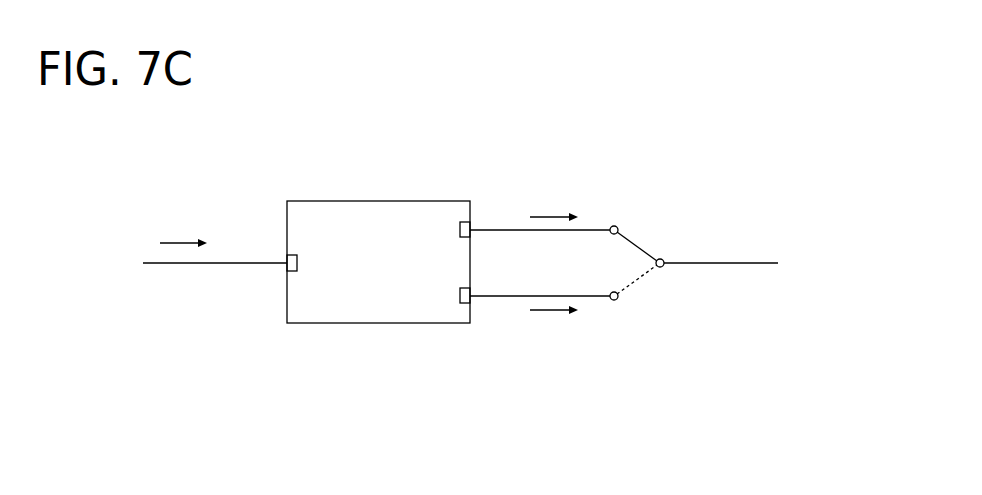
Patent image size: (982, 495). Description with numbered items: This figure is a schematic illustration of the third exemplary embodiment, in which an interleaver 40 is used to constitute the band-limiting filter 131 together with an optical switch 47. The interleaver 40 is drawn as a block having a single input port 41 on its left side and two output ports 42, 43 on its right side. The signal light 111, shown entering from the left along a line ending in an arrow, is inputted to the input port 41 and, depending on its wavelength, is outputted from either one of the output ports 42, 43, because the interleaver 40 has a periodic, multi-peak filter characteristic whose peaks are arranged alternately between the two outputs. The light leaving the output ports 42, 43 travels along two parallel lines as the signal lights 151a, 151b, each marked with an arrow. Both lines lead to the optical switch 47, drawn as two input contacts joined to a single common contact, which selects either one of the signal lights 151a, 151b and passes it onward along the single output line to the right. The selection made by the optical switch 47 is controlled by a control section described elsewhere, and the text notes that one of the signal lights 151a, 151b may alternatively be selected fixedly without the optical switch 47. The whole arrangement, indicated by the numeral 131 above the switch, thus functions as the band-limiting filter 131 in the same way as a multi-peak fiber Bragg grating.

The interleaver 40 is at (384, 201).
The input port 41 is at (288, 255).
The output port 42 is at (466, 222).
The output port 43 is at (465, 304).
The optical switch 47 is at (670, 222).
The signal light 111 is at (177, 243).
The band-limiting filter 131 is at (668, 138).
The signal light 151a is at (553, 215).
The signal light 151b is at (553, 312).